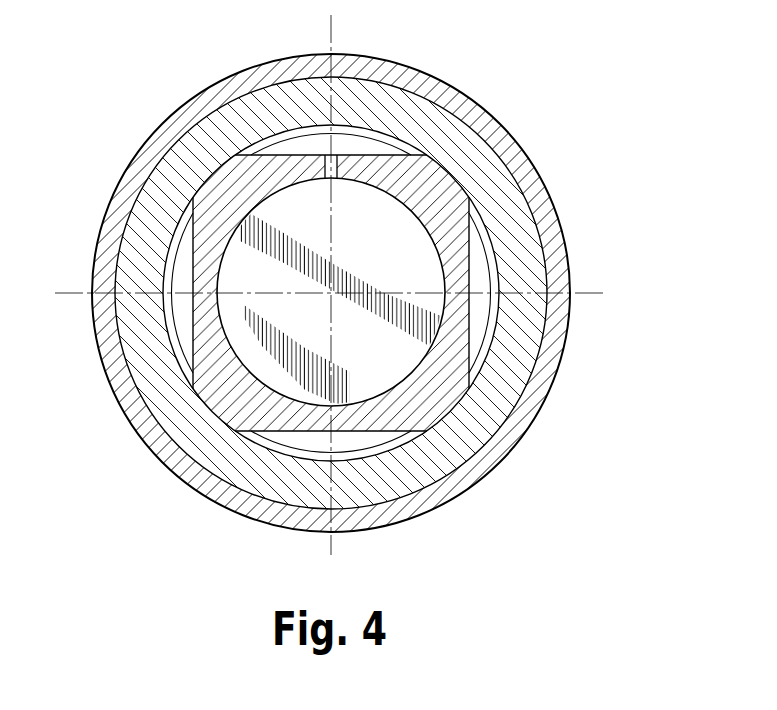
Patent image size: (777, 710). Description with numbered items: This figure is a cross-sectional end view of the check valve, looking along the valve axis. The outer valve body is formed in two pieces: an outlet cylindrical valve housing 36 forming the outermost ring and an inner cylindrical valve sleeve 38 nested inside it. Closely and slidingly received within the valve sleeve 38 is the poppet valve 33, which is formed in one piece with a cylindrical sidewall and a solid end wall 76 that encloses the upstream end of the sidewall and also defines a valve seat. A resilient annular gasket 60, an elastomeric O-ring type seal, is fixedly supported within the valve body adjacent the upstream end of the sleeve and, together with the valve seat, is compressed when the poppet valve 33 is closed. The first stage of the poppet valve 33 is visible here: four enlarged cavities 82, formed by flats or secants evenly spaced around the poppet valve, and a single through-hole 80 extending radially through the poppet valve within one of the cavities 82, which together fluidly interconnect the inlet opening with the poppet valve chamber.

The poppet valve 33 is at (445, 342).
The outlet cylindrical valve housing 36 is at (480, 460).
The inner cylindrical valve sleeve 38 is at (508, 388).
The resilient annular gasket 60 is at (492, 263).
The end wall 76 is at (316, 327).
The through-hole 80 is at (333, 158).
The enlarged cavities 82 is at (283, 155).